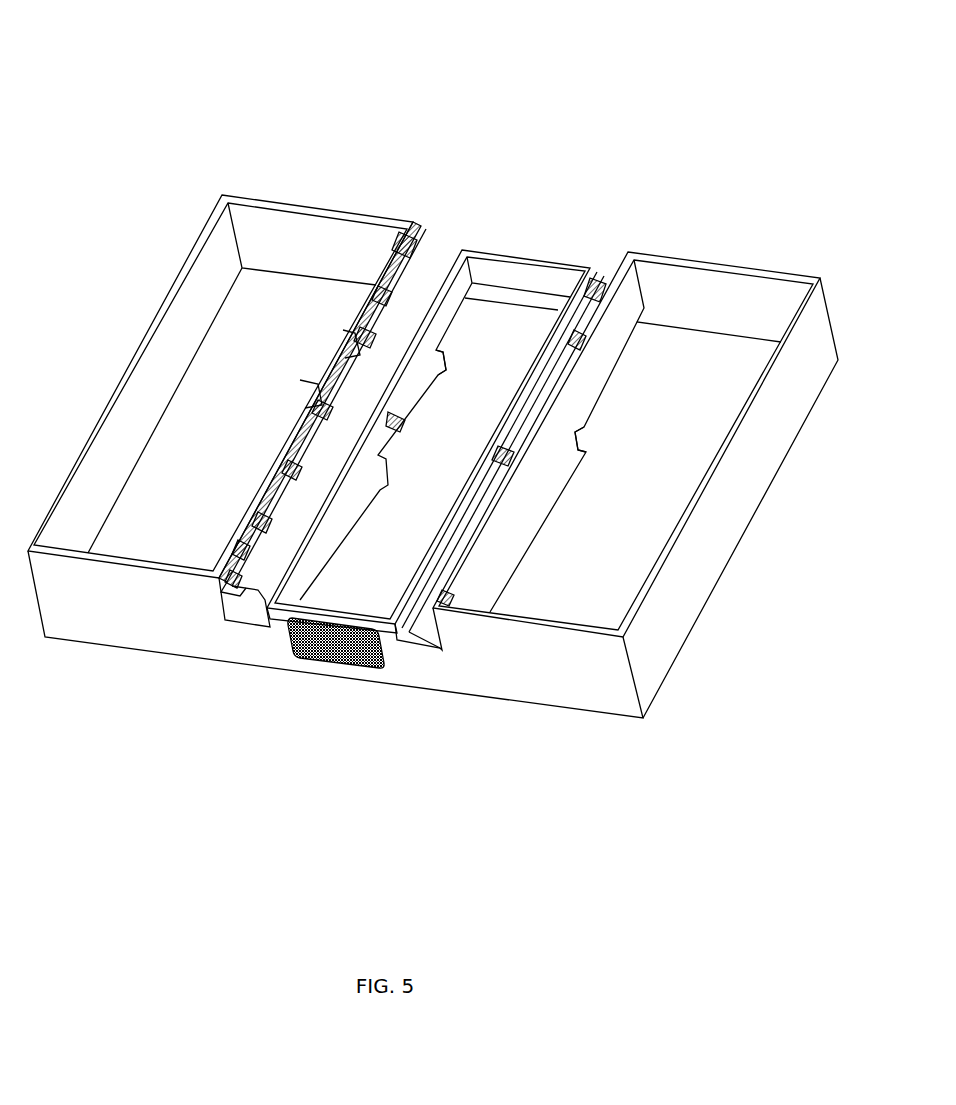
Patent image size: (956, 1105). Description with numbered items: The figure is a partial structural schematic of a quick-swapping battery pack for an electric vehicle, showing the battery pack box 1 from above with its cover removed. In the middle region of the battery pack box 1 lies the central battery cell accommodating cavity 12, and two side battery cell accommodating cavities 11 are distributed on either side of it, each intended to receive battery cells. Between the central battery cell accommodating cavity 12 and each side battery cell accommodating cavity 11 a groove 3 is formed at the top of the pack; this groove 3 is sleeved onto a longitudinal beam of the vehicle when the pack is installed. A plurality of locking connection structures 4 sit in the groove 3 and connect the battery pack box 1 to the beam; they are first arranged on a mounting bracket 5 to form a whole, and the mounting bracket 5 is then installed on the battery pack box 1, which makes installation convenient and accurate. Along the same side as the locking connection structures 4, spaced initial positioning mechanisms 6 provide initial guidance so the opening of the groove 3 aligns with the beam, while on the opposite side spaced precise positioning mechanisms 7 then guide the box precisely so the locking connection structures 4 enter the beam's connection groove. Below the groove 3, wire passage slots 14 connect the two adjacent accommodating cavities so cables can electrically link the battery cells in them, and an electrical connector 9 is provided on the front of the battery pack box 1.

The battery pack box 1 is at (150, 622).
The groove 3 is at (253, 612).
The locking connection structure 4 is at (436, 245).
The mounting bracket 5 is at (220, 592).
The initial positioning mechanism 6 is at (410, 227).
The precise positioning mechanism 7 is at (595, 285).
The electrical connector 9 is at (327, 665).
The side battery cell accommodating cavity 11 is at (282, 335).
The central battery cell accommodating cavity 12 is at (503, 340).
The wire passage slot 14 is at (432, 350).